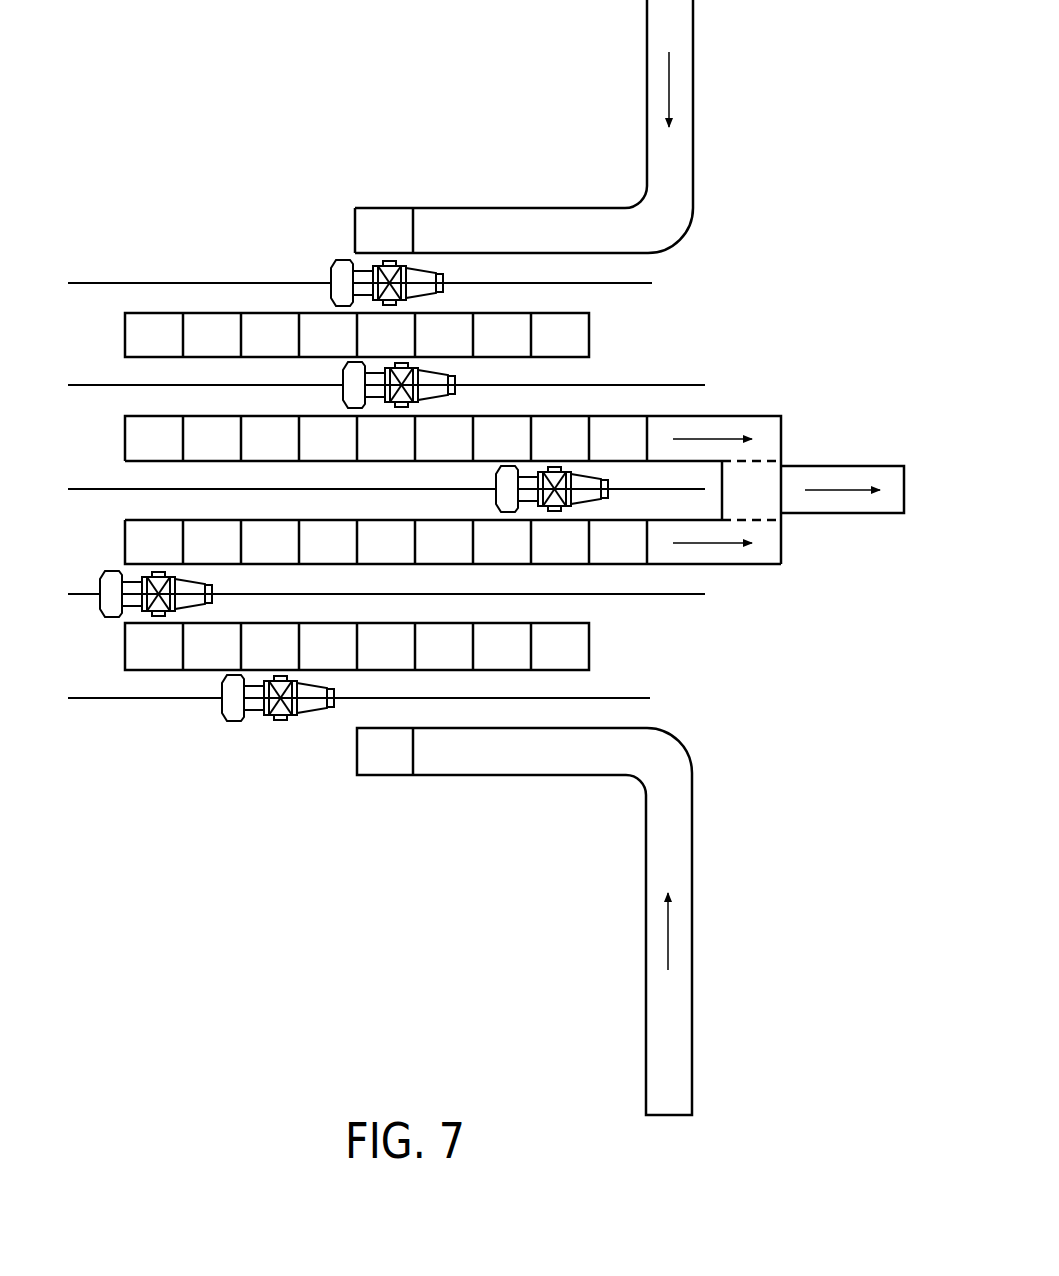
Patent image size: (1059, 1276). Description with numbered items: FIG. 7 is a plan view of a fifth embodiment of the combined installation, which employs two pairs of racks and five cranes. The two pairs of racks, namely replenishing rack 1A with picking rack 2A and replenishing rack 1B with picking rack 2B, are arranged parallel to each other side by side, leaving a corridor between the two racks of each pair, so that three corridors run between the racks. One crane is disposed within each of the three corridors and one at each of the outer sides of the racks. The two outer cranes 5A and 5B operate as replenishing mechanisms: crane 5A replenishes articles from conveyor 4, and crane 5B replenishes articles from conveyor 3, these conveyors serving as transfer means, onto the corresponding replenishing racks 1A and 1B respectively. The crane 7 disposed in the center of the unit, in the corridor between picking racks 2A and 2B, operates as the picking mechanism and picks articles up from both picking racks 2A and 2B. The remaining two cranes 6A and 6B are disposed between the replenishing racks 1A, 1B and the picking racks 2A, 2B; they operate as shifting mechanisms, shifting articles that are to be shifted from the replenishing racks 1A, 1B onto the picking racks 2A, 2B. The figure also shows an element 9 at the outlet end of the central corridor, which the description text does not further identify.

The replenishing rack 1A is at (138, 338).
The replenishing rack 1B is at (137, 648).
The picking rack 2A is at (138, 441).
The picking rack 2B is at (138, 544).
The conveyor 3 is at (685, 850).
The conveyor 4 is at (684, 160).
The crane 5A is at (340, 274).
The crane 5B is at (234, 718).
The crane 6A is at (441, 390).
The crane 6B is at (200, 597).
The crane 7 is at (505, 500).
The outlet duct 9 is at (853, 470).